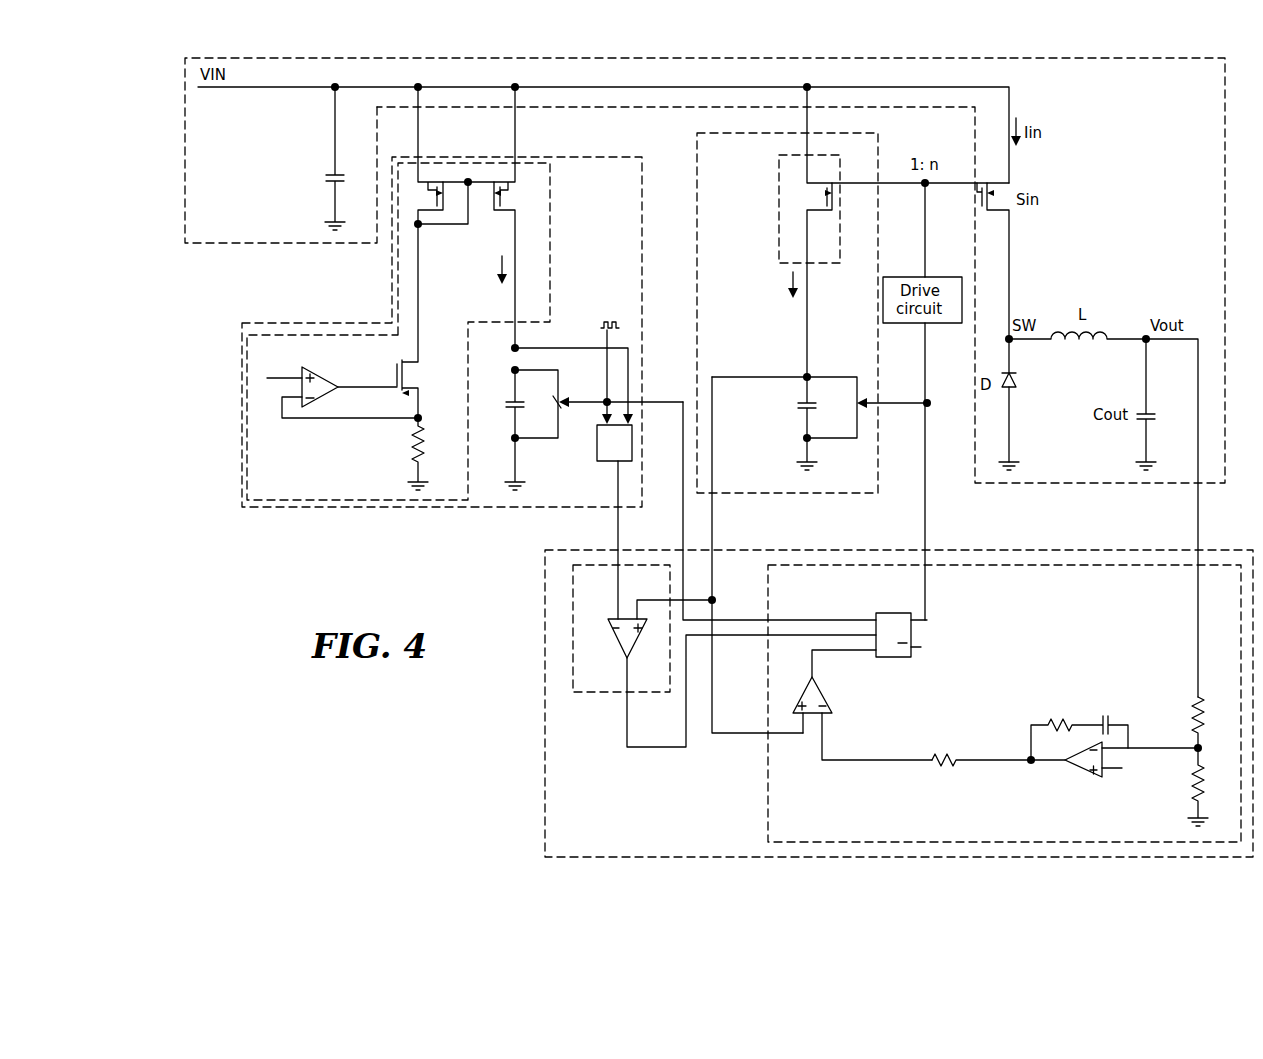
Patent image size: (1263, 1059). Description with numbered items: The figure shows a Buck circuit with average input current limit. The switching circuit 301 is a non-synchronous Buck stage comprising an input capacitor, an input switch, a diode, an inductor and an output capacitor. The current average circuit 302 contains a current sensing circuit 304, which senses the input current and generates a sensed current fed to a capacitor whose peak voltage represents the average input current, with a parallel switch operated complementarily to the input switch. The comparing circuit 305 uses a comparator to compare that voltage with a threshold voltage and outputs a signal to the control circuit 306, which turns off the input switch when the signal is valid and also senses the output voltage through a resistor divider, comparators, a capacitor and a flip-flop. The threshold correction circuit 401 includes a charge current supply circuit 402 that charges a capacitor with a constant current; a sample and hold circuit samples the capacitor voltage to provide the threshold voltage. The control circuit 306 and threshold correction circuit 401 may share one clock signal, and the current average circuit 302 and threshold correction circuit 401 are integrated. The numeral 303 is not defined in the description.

The switching circuit 301 is at (185, 175).
The current average circuit 302 is at (830, 493).
The control circuit 303 is at (545, 793).
The current sensing circuit 304 is at (779, 230).
The comparing circuit 305 is at (600, 692).
The control circuit 306 is at (768, 793).
The threshold correction circuit 401 is at (540, 508).
The charge current supply circuit 402 is at (550, 262).